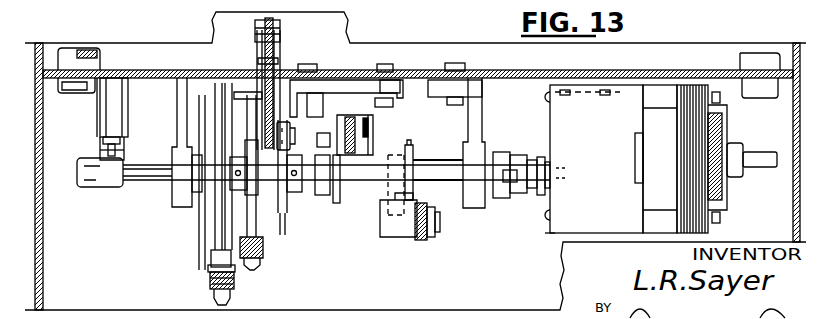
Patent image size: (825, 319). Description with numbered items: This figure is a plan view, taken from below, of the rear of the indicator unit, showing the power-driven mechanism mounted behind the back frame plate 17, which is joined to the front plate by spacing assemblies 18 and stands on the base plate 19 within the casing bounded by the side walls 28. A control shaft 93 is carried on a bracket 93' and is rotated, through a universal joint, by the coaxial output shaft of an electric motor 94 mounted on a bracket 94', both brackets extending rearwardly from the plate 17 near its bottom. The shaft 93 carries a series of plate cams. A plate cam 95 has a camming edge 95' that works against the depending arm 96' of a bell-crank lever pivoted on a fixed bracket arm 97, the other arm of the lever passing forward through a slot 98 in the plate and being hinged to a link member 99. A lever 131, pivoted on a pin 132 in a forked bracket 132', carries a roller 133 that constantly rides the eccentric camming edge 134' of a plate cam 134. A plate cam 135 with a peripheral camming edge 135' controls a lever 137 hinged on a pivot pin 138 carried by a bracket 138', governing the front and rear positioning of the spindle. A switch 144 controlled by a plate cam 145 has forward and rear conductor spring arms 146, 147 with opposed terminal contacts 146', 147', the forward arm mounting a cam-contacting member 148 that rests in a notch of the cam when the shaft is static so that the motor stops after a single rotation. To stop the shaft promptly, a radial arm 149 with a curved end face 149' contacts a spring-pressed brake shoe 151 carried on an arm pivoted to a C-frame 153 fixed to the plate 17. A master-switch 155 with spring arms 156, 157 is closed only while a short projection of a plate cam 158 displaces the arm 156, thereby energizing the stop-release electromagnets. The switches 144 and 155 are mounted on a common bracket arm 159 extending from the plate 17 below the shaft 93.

The back frame plate 17 is at (560, 78).
The spacing assemblies 18 is at (70, 56).
The base plate 19 is at (96, 277).
The side walls 28 is at (43, 212).
The control shaft 93 is at (313, 182).
The shaft bracket 93' is at (335, 143).
The electric motor 94 is at (636, 143).
The motor bracket 94' is at (537, 244).
The plate cam 95 is at (306, 225).
The camming edge 95' is at (301, 170).
The depending arm 96' is at (286, 90).
The fixed bracket arm 97 is at (216, 108).
The slot 98 is at (267, 63).
The link member 99 is at (280, 25).
The lever 131 is at (364, 130).
The pin 132 is at (301, 136).
The forked bracket 132' is at (355, 129).
The roller 133 is at (317, 146).
The plate cam 134 is at (344, 180).
The eccentric camming edge 134' is at (372, 191).
The plate cam 135 is at (438, 161).
The peripheral camming edge 135' is at (425, 163).
The lever 137 is at (417, 240).
The pivot pin 138 is at (447, 222).
The bracket 138' is at (398, 227).
The switch 144 is at (191, 281).
The plate cam 145 is at (222, 215).
The forward conductor spring arm 146 is at (197, 262).
The terminal contact 146' is at (244, 278).
The rear conductor spring arm 147 is at (199, 298).
The terminal contact 147' is at (245, 289).
The cam-contacting member 148 is at (213, 263).
The radial arm 149 is at (87, 148).
The curved end face 149' is at (82, 140).
The brake shoe 151 is at (100, 136).
The C-frame 153 is at (73, 107).
The master-switch 155 is at (284, 262).
The spring arm 156 is at (265, 247).
The spring arm 157 is at (265, 258).
The plate cam 158 is at (231, 166).
The bracket arm 159 is at (212, 108).